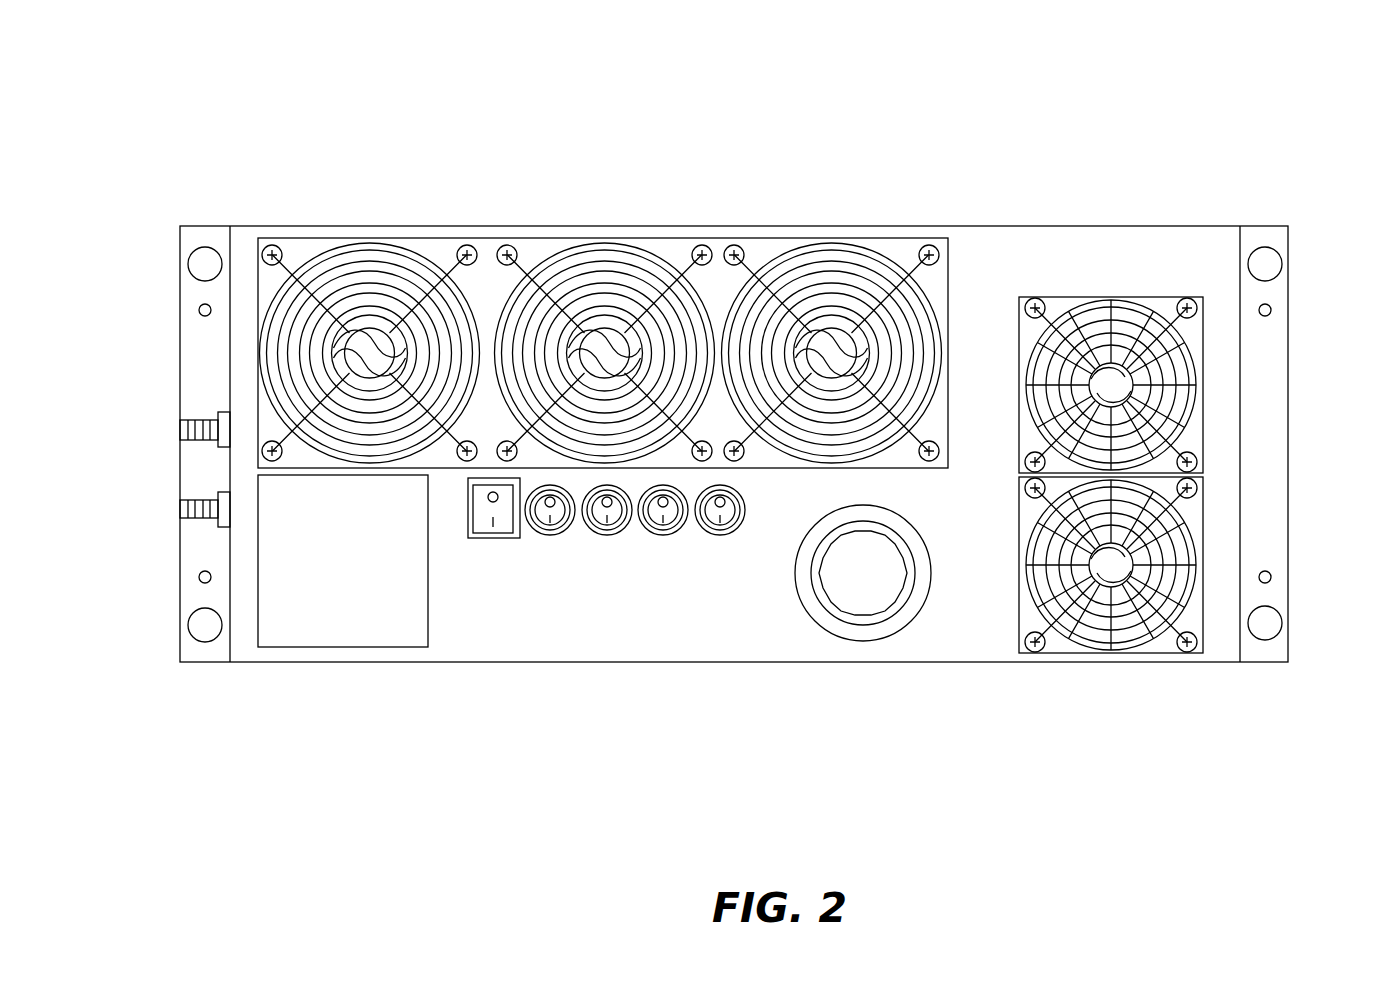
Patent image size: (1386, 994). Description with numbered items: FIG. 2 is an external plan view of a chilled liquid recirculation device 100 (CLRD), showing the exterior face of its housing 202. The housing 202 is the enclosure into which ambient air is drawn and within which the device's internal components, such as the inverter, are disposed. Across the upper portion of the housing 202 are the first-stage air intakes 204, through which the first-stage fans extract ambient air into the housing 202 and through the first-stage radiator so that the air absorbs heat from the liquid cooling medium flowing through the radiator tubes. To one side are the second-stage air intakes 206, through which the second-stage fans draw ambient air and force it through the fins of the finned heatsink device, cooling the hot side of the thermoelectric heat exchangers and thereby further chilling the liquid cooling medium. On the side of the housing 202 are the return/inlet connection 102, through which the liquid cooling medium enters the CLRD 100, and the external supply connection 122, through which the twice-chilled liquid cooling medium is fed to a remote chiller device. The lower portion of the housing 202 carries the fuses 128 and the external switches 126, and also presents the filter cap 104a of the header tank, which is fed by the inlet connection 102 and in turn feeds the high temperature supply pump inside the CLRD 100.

The chilled liquid recirculation device 100 is at (125, 100).
The housing 202 is at (687, 660).
The first-stage air intakes 204 is at (838, 298).
The second-stage air intakes 206 is at (1155, 577).
The return/inlet connection 102 is at (180, 427).
The external supply connection 122 is at (180, 508).
The fuses 128 is at (346, 622).
The external switches 126 is at (485, 508).
The filter cap 104a is at (863, 575).